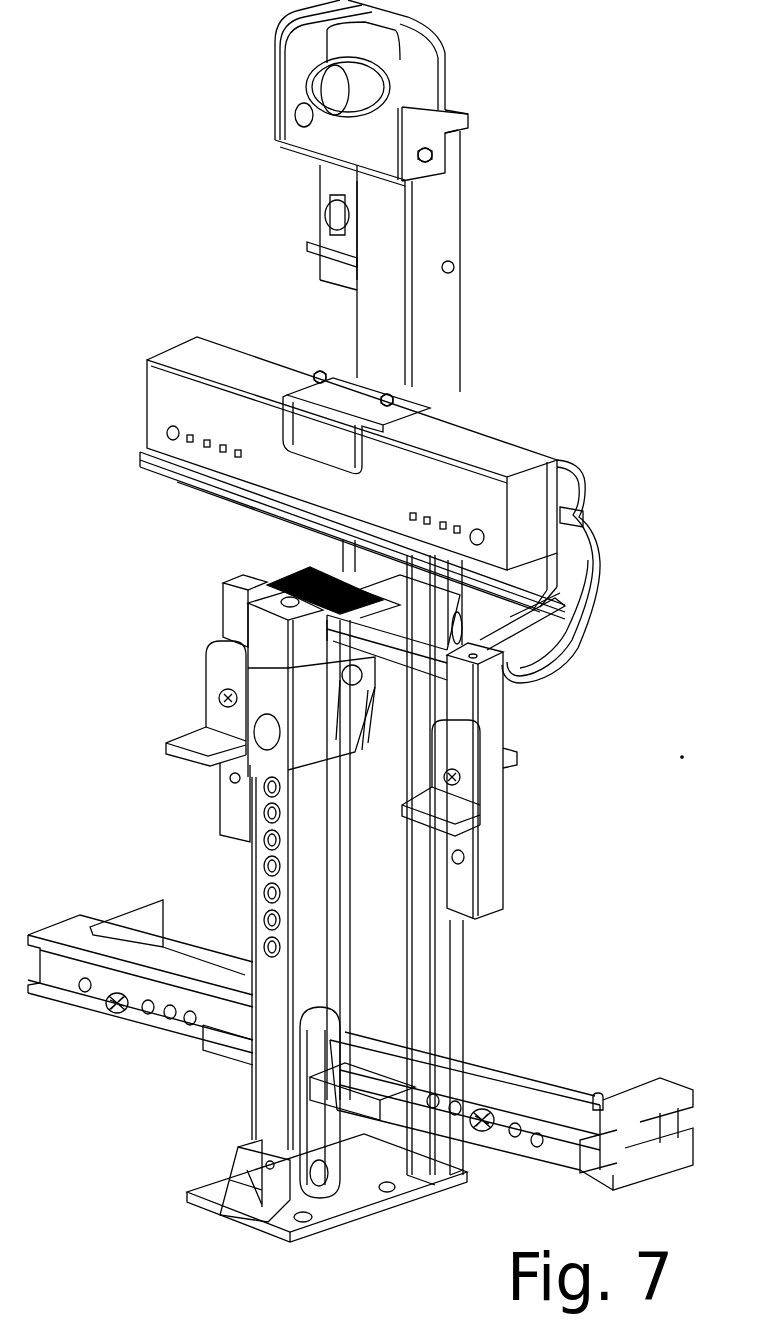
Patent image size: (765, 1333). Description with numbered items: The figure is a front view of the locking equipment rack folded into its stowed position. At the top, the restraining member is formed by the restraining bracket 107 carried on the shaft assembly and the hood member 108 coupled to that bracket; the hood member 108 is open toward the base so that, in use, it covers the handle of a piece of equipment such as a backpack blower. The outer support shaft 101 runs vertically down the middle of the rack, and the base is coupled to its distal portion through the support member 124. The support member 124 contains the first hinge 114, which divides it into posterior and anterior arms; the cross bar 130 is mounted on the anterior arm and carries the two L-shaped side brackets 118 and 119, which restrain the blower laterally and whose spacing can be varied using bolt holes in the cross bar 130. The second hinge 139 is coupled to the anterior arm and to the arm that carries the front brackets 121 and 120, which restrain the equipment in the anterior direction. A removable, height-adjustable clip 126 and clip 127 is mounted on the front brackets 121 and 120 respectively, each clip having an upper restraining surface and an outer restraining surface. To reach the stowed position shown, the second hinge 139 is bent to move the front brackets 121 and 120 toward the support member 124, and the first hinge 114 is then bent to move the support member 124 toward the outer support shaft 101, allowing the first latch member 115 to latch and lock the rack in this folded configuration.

The outer support shaft 101 is at (463, 963).
The restraining bracket 107 is at (400, 403).
The hood member 108 is at (497, 440).
The first hinge 114 is at (322, 1187).
The first latch member 115 is at (347, 568).
The side bracket 118 is at (77, 912).
The side bracket 119 is at (657, 1082).
The front bracket 120 is at (500, 875).
The front bracket 121 is at (228, 823).
The support member 124 is at (255, 903).
The clip 126 is at (187, 733).
The clip 127 is at (413, 813).
The cross bar 130 is at (347, 1052).
The second hinge 139 is at (358, 690).